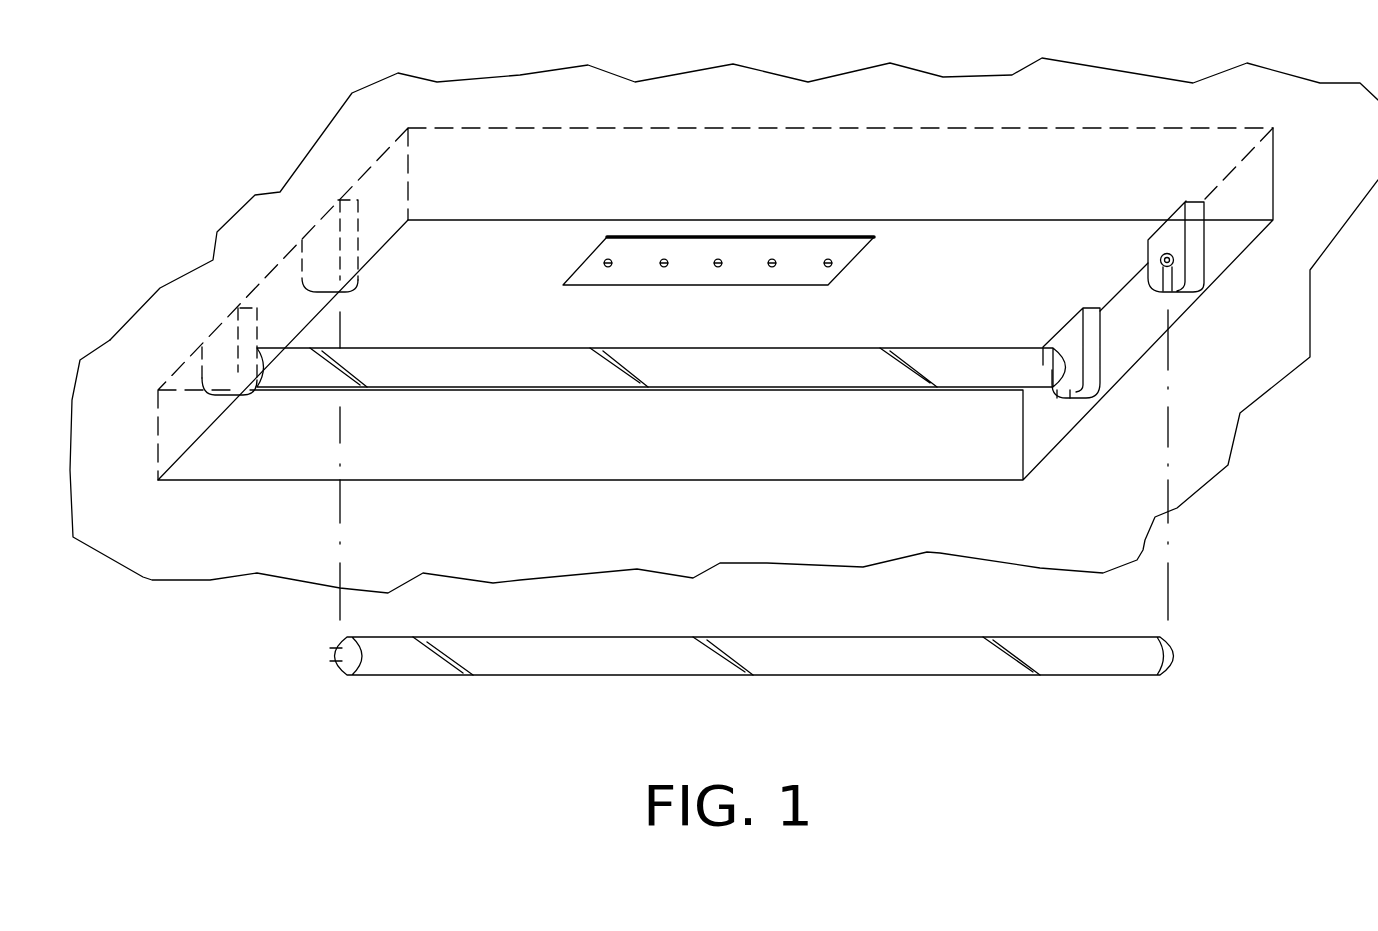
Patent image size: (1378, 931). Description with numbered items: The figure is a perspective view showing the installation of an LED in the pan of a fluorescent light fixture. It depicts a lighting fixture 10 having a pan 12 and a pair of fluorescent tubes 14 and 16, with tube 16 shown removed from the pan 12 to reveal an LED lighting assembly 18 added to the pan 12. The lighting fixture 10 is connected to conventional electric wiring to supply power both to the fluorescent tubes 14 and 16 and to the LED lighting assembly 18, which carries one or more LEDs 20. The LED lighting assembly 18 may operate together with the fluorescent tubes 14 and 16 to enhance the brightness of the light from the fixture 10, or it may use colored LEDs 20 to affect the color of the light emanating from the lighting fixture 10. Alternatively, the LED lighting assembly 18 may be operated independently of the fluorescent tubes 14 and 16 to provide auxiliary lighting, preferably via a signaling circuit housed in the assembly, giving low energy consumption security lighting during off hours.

The lighting fixture 10 is at (278, 267).
The pan 12 is at (788, 313).
The fluorescent tube 14 is at (453, 370).
The fluorescent tube 16 is at (973, 663).
The LED lighting assembly 18 is at (848, 252).
The LEDs 20 is at (608, 270).